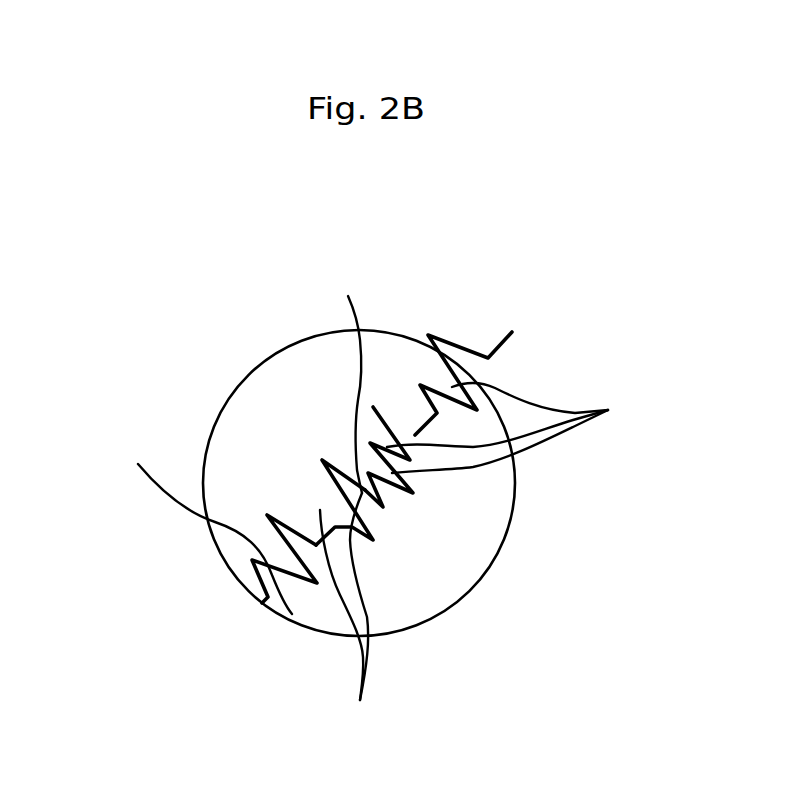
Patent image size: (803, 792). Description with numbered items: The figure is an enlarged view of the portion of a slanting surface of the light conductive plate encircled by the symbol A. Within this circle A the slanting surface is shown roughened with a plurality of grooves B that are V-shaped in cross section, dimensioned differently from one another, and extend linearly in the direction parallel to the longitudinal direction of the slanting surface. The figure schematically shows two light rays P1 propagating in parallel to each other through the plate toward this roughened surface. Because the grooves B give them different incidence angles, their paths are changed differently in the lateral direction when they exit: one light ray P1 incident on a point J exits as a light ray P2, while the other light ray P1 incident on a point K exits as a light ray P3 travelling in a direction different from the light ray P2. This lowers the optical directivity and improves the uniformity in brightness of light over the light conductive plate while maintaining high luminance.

The circle A is at (248, 346).
The point J is at (349, 379).
The point K is at (208, 525).
The grooves B is at (477, 532).
The light rays P1 is at (365, 507).
The light ray P2 is at (365, 490).
The light ray P3 is at (280, 572).